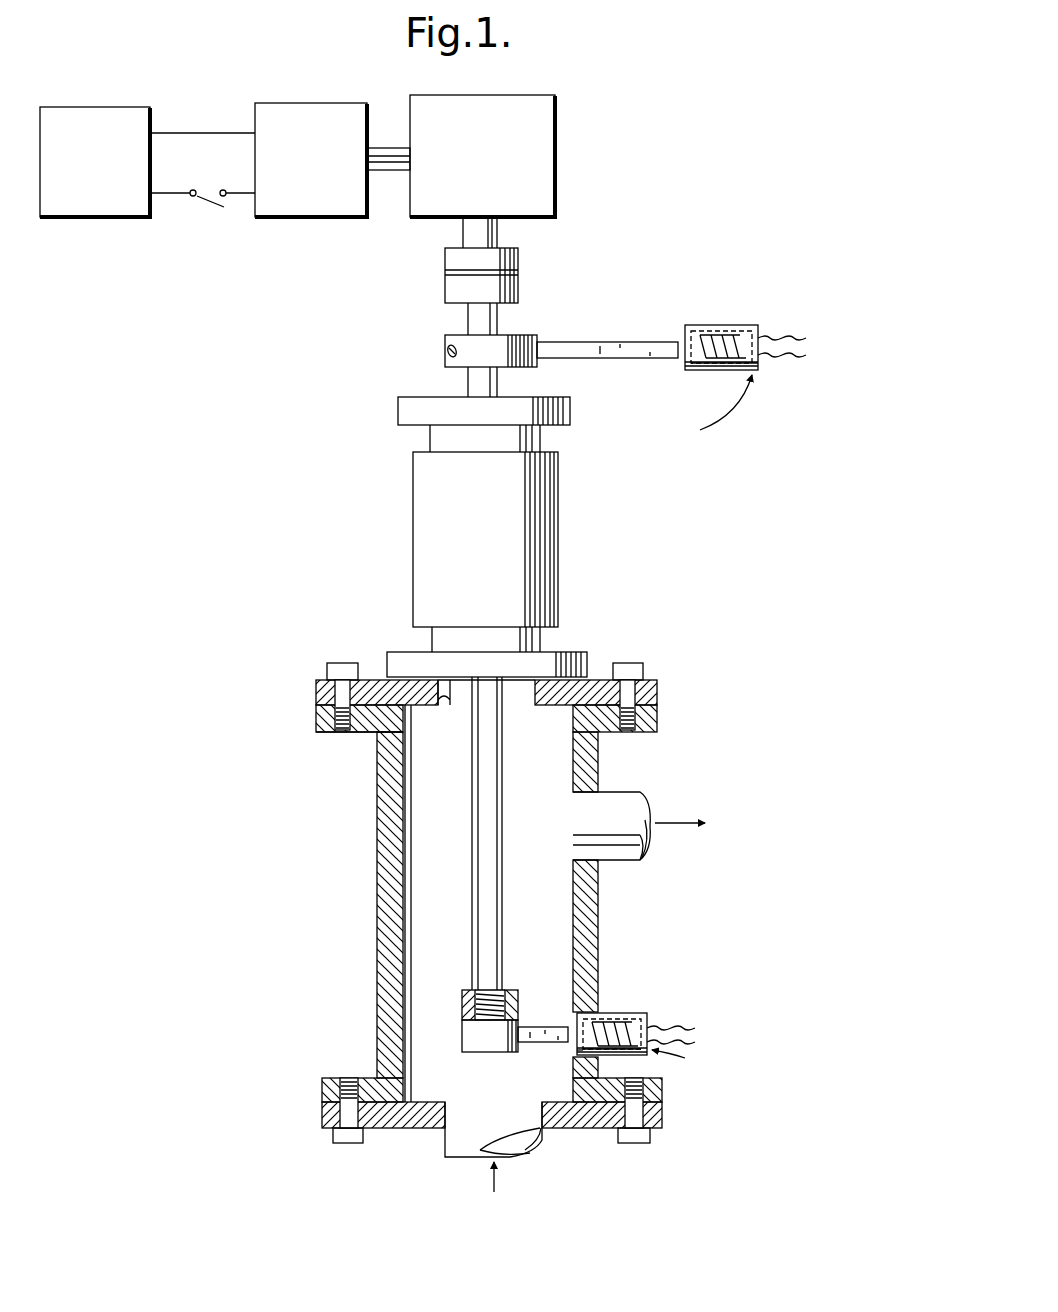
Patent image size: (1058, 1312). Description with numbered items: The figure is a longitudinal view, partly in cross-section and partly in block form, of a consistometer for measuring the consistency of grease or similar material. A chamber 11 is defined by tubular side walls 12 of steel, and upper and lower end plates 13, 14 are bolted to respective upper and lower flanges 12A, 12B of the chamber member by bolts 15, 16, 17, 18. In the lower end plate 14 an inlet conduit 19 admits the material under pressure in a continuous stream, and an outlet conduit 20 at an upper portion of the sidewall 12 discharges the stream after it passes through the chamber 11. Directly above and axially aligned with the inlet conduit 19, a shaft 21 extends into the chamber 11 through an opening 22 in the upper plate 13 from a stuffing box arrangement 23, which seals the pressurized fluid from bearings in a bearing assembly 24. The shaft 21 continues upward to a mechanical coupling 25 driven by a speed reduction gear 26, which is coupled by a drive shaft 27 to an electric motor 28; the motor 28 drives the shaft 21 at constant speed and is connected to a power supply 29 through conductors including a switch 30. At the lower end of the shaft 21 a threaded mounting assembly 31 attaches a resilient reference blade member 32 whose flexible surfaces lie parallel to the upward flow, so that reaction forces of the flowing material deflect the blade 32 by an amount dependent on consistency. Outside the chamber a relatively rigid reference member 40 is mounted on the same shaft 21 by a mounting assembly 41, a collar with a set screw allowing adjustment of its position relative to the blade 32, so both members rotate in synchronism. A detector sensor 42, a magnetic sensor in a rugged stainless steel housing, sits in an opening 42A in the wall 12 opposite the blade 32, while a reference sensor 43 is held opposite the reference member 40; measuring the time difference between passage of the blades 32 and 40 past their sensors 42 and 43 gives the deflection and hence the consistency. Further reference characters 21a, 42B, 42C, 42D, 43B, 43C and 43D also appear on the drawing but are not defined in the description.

The chamber 11 is at (450, 825).
The tubular side walls 12 is at (489, 917).
The upper flange 12A is at (370, 735).
The lower flange 12B is at (368, 1075).
The upper end plate 13 is at (366, 680).
The lower end plate 14 is at (396, 1128).
The bolt 15 is at (339, 662).
The bolt 16 is at (622, 662).
The bolt 17 is at (341, 1143).
The bolt 18 is at (632, 1143).
The inlet conduit 19 is at (500, 1131).
The outlet conduit 20 is at (612, 802).
The shaft 21 is at (468, 314).
The drive shaft 21a is at (497, 237).
The opening 22 is at (447, 706).
The stuffing box arrangement 23 is at (470, 668).
The bearing assembly 24 is at (492, 536).
The mechanical coupling 25 is at (445, 275).
The speed reduction gear 26 is at (545, 163).
The drive shaft 27 is at (392, 163).
The electric motor 28 is at (297, 217).
The power supply 29 is at (92, 207).
The switch 30 is at (210, 205).
The mounting assembly 31 is at (465, 1021).
The resilient reference blade member 32 is at (535, 1027).
The reference member 40 is at (612, 321).
The mounting assembly 41 is at (445, 346).
The detector sensor 42 is at (661, 1015).
The opening 42A is at (582, 1016).
The detector sensor coil 42B is at (628, 1030).
The detector sensor face 42C is at (578, 1050).
The detector sensor core 42D is at (608, 1013).
The reference sensor 43 is at (750, 363).
The reference sensor coil 43B is at (748, 345).
The reference sensor face 43C is at (697, 366).
The reference sensor core 43D is at (740, 325).